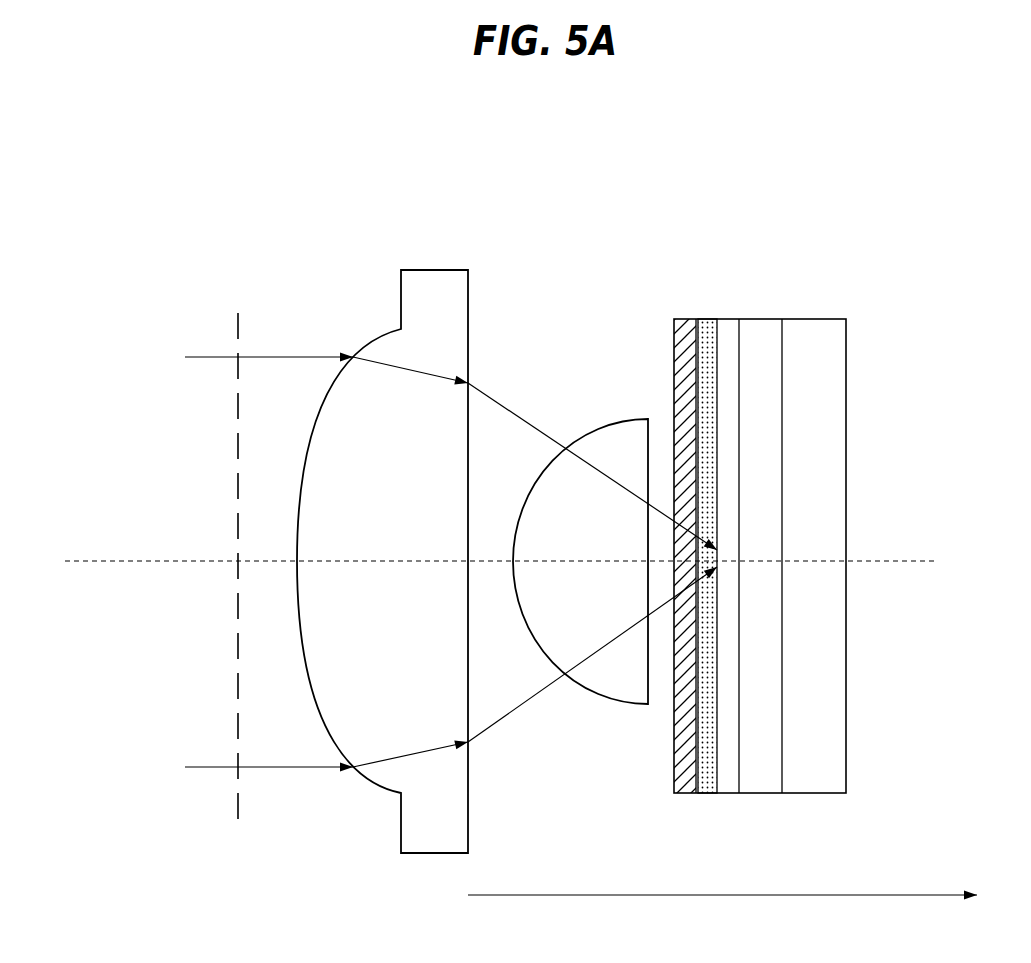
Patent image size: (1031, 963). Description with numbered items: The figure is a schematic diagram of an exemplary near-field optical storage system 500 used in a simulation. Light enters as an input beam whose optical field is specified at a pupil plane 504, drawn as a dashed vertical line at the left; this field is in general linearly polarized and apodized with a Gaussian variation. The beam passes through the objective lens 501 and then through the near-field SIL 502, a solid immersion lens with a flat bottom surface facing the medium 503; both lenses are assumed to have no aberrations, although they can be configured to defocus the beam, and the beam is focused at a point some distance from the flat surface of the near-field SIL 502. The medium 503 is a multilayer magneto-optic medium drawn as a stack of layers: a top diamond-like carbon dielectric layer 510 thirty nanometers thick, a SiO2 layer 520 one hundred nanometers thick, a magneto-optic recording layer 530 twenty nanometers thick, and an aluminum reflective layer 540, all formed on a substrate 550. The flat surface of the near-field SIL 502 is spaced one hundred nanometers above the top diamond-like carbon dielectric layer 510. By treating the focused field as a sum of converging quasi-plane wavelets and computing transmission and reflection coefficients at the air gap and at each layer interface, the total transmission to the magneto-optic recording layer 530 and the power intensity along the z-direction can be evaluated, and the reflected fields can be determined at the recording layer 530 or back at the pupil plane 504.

The system 500 is at (562, 196).
The objective lens 501 is at (470, 810).
The near-field SIL 502 is at (612, 418).
The medium 503 is at (883, 796).
The pupil plane 504 is at (237, 325).
The top diamond-like carbon dielectric layer 510 is at (683, 793).
The SiO2 layer 520 is at (705, 793).
The magneto-optic recording layer 530 is at (727, 793).
The aluminum reflective layer 540 is at (770, 318).
The substrate 550 is at (813, 318).